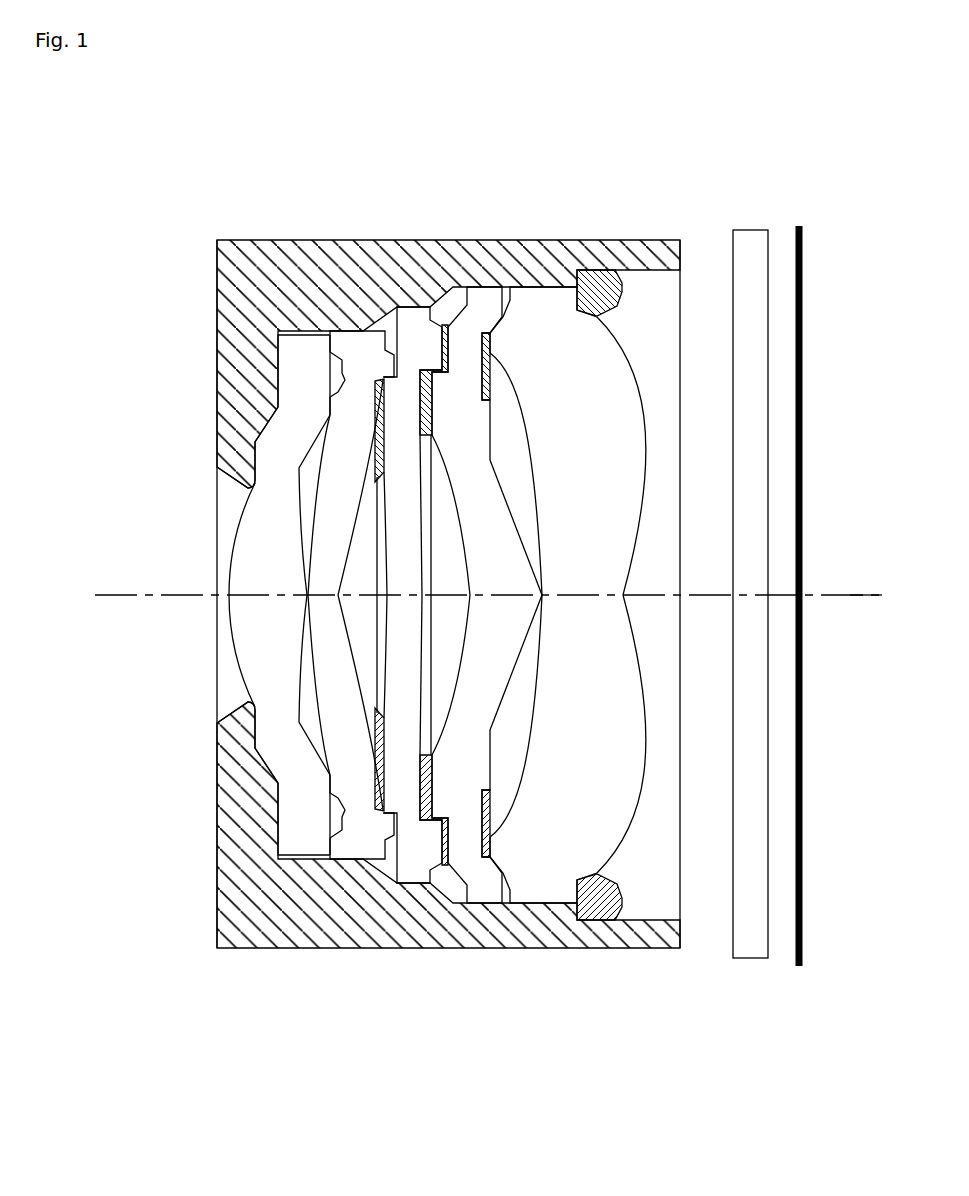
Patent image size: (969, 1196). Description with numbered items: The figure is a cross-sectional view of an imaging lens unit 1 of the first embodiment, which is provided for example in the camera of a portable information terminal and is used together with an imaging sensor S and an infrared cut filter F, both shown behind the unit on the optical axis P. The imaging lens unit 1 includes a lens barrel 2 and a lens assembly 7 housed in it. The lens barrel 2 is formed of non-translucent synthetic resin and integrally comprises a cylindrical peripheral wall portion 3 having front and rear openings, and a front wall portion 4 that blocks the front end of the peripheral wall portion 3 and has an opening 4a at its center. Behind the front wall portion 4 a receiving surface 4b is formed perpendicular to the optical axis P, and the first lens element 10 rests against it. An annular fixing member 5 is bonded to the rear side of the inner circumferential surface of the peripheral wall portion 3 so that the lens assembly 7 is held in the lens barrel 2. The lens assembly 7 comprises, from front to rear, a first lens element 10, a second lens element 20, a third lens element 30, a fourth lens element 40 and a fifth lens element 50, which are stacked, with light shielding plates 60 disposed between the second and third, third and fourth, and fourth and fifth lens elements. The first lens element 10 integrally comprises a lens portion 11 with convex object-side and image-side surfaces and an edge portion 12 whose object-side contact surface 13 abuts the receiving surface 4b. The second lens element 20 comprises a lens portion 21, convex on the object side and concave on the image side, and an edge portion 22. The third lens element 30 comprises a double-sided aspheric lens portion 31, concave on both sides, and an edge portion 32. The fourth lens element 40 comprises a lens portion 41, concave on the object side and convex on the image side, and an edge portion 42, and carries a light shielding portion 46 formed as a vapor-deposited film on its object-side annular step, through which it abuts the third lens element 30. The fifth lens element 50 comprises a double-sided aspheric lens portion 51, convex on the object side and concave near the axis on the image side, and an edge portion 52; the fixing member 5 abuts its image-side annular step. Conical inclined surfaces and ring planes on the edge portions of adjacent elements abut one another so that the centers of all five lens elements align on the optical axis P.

The imaging lens unit 1 is at (543, 147).
The lens barrel 2 is at (238, 240).
The peripheral wall portion 3 is at (653, 240).
The front wall portion 4 is at (217, 799).
The opening 4a is at (243, 690).
The receiving surface 4b is at (276, 387).
The fixing member 5 is at (597, 270).
The lens assembly 7 is at (229, 581).
The first lens element 10 is at (308, 353).
The lens portion 11 is at (257, 647).
The edge portion 12 is at (287, 759).
The contact surface 13 is at (277, 368).
The second lens element 20 is at (360, 353).
The lens portion 21 is at (318, 548).
The edge portion 22 is at (340, 450).
The third lens element 30 is at (413, 322).
The lens portion 31 is at (403, 617).
The edge portion 32 is at (403, 417).
The fourth lens element 40 is at (483, 310).
The lens portion 41 is at (502, 665).
The edge portion 42 is at (457, 802).
The light shielding portion 46 is at (446, 322).
The fifth lens element 50 is at (556, 318).
The lens portion 51 is at (617, 490).
The edge portion 52 is at (543, 323).
The light shielding plates 60 is at (535, 750).
The infrared cut filter F is at (750, 230).
The imaging sensor S is at (800, 225).
The optical axis P is at (857, 593).